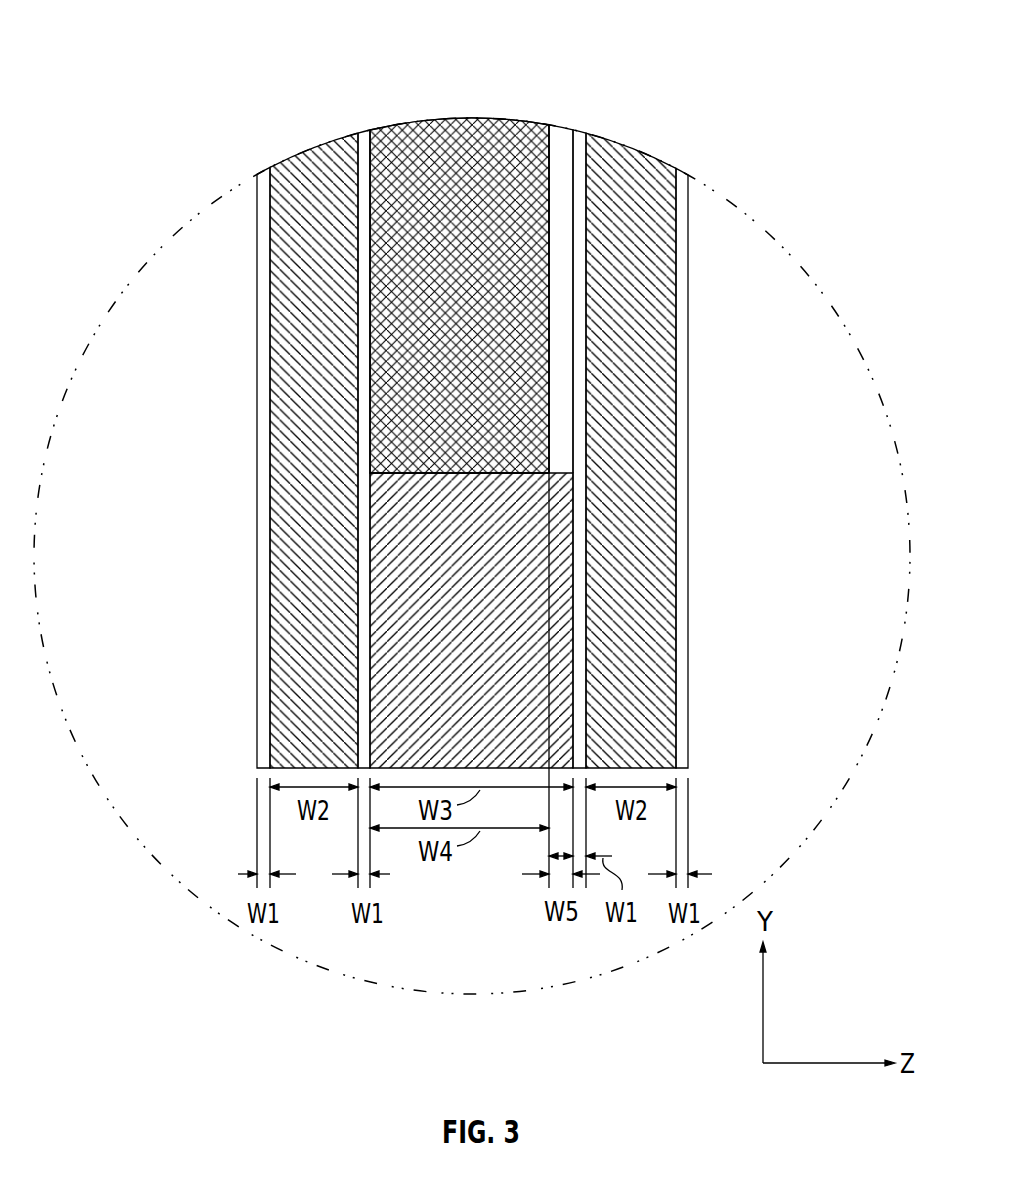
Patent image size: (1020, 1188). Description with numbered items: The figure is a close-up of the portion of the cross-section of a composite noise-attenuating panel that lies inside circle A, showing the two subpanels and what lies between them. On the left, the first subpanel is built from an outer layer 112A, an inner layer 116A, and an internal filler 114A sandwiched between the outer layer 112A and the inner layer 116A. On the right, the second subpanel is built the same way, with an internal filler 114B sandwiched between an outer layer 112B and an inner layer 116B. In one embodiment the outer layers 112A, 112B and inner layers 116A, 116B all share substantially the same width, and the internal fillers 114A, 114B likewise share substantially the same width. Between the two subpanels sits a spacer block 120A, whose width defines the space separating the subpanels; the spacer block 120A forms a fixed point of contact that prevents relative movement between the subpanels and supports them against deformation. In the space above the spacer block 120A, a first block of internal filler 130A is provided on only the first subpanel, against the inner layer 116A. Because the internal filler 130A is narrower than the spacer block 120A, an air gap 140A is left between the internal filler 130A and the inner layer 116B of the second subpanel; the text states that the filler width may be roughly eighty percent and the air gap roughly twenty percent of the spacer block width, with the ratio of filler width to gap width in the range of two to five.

The circle A is at (152, 258).
The outer layer 112A is at (265, 178).
The internal filler 114A is at (308, 452).
The inner layer 116A is at (366, 132).
The first block of internal filler 130A is at (487, 135).
The spacer block 120A is at (370, 551).
The air gap 140A is at (563, 374).
The inner layer 116B is at (580, 133).
The internal filler 114B is at (655, 540).
The outer layer 112B is at (680, 172).